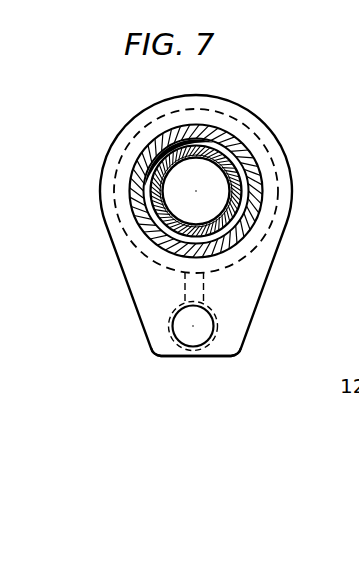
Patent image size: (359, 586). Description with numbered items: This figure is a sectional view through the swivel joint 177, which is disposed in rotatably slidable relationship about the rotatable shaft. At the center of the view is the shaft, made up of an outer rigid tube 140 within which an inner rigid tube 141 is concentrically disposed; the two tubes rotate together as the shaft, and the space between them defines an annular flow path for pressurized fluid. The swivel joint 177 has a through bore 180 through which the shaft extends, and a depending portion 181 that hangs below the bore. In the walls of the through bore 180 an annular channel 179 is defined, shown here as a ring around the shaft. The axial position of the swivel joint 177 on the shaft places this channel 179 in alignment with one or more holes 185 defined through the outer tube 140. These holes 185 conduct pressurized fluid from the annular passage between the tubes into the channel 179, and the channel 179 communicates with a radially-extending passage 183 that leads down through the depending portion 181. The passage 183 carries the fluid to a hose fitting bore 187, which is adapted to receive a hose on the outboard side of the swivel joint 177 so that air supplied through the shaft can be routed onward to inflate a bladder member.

The swivel joint 177 is at (72, 150).
The annular channel 179 is at (240, 131).
The through bore 180 is at (253, 220).
The inner rigid tube 141 is at (240, 184).
The outer rigid tube 140 is at (143, 223).
The holes 185 is at (201, 128).
The radially-extending passage 183 is at (200, 287).
The hose fitting bore 187 is at (177, 334).
The depending portion 181 is at (240, 343).